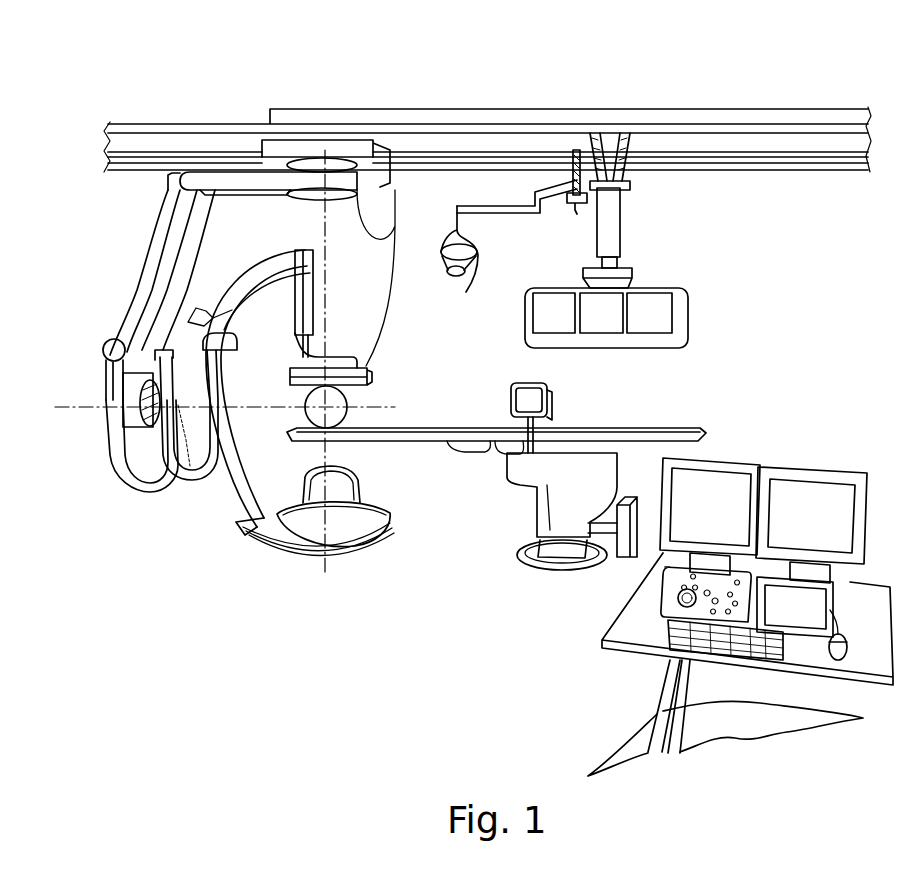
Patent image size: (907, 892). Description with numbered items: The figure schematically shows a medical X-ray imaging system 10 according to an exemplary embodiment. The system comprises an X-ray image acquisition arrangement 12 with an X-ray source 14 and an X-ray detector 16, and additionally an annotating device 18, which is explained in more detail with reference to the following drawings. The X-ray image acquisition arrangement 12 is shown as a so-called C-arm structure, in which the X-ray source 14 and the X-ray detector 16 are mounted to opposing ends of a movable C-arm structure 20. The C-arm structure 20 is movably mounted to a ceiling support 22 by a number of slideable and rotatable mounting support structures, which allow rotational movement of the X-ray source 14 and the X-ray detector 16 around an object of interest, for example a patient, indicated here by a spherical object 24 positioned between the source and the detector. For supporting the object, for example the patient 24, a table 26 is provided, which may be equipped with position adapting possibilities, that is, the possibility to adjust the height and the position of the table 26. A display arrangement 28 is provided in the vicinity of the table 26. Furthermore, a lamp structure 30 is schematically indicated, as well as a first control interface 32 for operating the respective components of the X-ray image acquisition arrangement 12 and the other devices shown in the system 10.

The medical X-ray imaging system 10 is at (456, 347).
The X-ray image acquisition arrangement 12 is at (131, 258).
The X-ray source 14 is at (350, 490).
The X-ray detector 16 is at (372, 346).
The annotating device 18 is at (768, 438).
The C-arm structure 20 is at (218, 500).
The ceiling support 22 is at (328, 117).
The spherical object 24 is at (352, 414).
The table 26 is at (680, 432).
The display arrangement 28 is at (650, 277).
The lamp structure 30 is at (441, 232).
The first control interface 32 is at (510, 403).